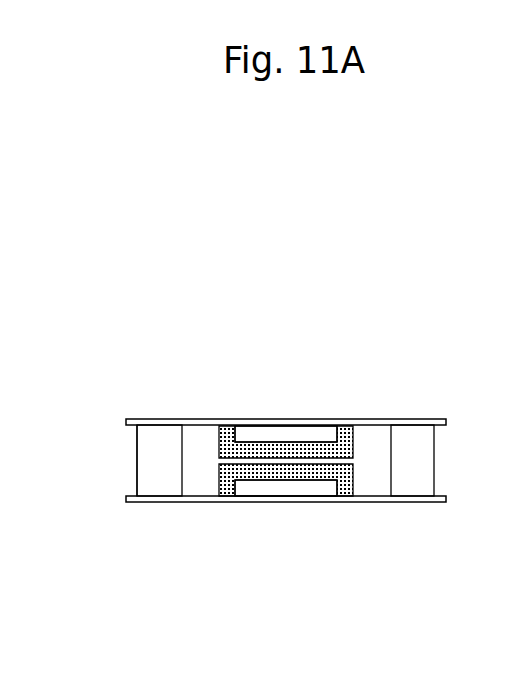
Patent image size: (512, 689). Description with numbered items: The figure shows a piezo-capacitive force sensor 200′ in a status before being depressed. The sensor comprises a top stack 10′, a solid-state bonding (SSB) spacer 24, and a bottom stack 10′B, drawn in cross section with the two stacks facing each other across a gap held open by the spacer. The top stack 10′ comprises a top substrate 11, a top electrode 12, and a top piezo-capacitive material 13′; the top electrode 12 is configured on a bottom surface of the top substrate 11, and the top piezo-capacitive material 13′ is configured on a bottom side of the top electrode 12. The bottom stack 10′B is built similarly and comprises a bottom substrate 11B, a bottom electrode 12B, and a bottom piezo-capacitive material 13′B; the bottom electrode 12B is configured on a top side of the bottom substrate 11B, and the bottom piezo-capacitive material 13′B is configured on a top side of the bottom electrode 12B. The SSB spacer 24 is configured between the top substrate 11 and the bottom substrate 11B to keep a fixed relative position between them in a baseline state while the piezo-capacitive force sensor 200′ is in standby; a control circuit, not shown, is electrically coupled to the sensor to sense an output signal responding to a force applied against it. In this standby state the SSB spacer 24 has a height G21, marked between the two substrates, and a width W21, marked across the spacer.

The piezo-capacitive force sensor 200′ is at (330, 253).
The top substrate 11 is at (254, 419).
The top electrode 12 is at (272, 437).
The top piezo-capacitive material 13′ is at (293, 453).
The top stack 10′ is at (366, 333).
The bottom substrate 11B is at (268, 502).
The bottom electrode 12B is at (287, 490).
The bottom piezo-capacitive material 13′B is at (312, 472).
The bottom stack 10′B is at (393, 522).
The solid-state bonding spacer 24 is at (170, 472).
The solid-state bonding SSB is at (150, 463).
The height G21 is at (446, 426).
The width W21 is at (242, 565).